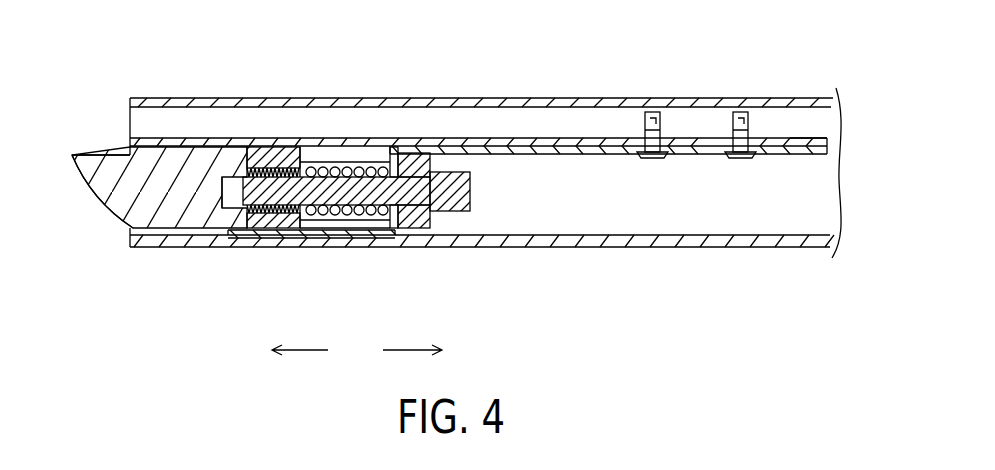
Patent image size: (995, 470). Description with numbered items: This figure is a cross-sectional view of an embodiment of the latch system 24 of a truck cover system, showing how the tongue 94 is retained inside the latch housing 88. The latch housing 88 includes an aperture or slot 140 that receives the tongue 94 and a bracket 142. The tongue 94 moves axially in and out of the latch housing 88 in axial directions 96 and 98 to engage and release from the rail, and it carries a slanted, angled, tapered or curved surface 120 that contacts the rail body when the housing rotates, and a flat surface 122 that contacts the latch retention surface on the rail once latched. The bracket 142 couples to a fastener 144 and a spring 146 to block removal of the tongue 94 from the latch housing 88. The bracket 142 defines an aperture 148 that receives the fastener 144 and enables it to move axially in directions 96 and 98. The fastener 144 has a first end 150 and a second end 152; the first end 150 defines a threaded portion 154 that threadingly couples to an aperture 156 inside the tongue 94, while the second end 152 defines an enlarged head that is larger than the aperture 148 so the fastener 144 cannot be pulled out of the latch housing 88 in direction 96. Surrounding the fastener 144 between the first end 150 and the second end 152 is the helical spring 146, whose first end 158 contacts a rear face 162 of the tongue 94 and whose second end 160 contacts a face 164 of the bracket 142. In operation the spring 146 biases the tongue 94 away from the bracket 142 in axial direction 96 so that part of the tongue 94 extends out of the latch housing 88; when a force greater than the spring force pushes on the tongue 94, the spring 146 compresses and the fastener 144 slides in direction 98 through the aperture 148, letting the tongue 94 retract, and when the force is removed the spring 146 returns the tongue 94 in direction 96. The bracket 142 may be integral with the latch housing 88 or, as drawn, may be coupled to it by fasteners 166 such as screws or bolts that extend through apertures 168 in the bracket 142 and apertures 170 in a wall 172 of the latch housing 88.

The latch system 24 is at (778, 93).
The latch housing 88 is at (437, 103).
The tongue 94 is at (158, 202).
The axial direction 96 is at (306, 351).
The axial direction 98 is at (408, 351).
The surface 120 is at (100, 205).
The surface 122 is at (105, 155).
The aperture or slot 140 is at (820, 188).
The bracket 142 is at (507, 150).
The fastener 144 is at (397, 190).
The spring 146 is at (346, 239).
The aperture 148 is at (400, 206).
The first end 150 is at (262, 162).
The second end 152 is at (482, 193).
The threaded portion 154 is at (278, 205).
The aperture 156 is at (222, 178).
The first end 158 is at (305, 165).
The second end 160 is at (385, 212).
The rear face 162 is at (300, 152).
The face 164 is at (398, 210).
The fasteners 166 is at (653, 160).
The apertures 168 is at (647, 141).
The apertures 170 is at (661, 140).
The wall 172 is at (808, 142).